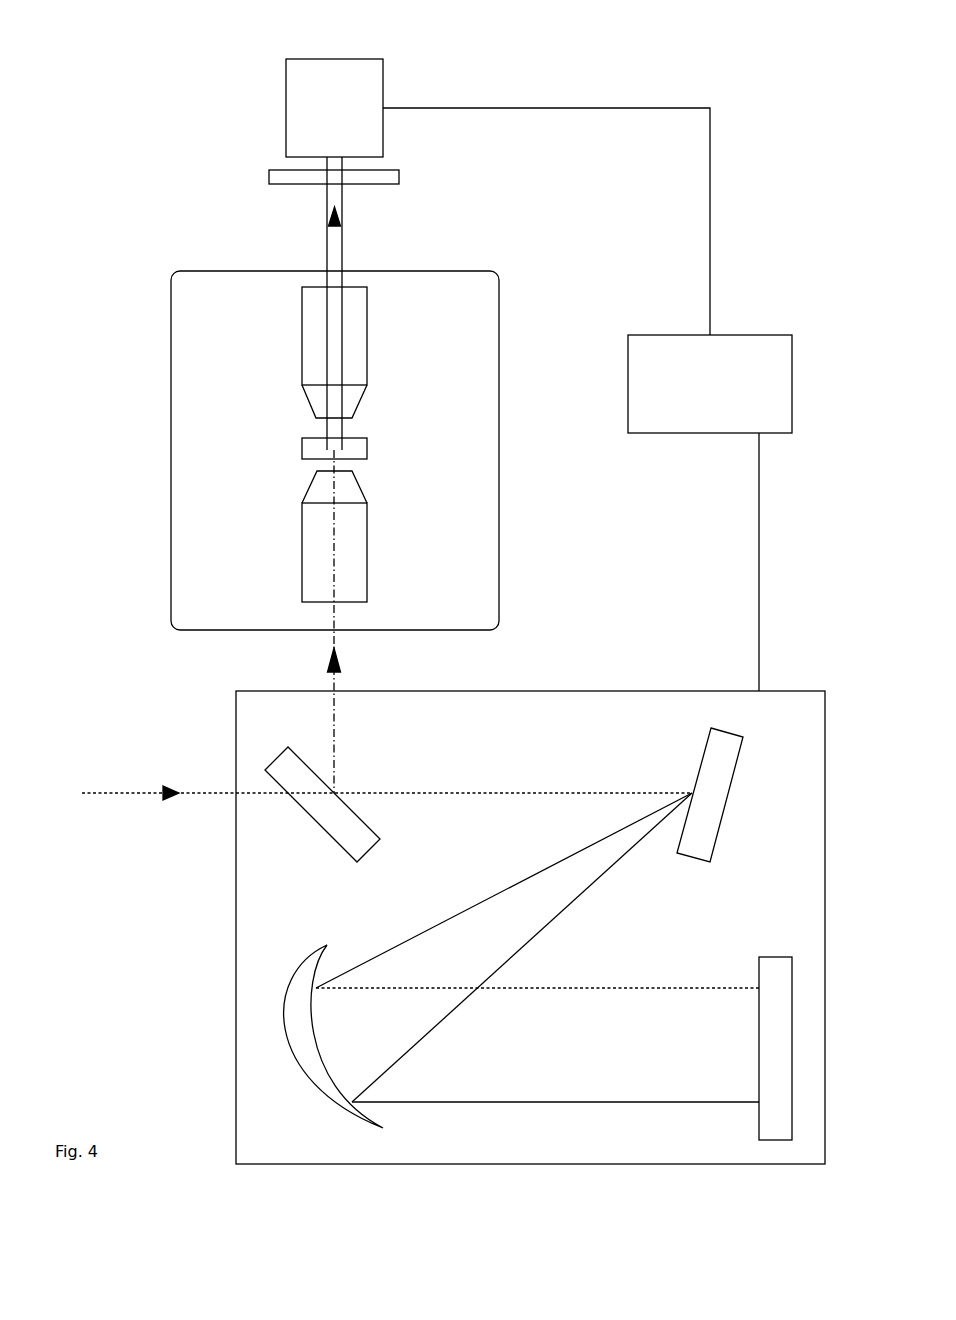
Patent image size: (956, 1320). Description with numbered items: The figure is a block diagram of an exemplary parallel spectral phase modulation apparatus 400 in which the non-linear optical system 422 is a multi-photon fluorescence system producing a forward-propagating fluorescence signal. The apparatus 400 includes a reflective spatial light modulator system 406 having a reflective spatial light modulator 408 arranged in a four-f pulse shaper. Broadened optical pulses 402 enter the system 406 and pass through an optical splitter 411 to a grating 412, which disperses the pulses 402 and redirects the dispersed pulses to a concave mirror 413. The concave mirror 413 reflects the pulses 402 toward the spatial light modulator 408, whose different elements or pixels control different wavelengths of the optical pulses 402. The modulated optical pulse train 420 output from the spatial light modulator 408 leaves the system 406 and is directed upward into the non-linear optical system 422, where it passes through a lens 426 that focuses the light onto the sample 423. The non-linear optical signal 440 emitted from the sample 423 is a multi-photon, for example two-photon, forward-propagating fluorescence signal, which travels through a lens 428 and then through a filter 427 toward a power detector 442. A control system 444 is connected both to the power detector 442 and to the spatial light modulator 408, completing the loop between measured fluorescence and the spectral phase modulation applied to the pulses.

The parallel spectral phase modulation apparatus 400 is at (697, 22).
The broadened optical pulses 402 is at (142, 793).
The reflective spatial light modulator system 406 is at (597, 691).
The reflective spatial light modulator 408 is at (772, 957).
The optical splitter 411 is at (325, 826).
The grating 412 is at (722, 818).
The concave mirror 413 is at (323, 950).
The modulated optical pulse train 420 is at (336, 718).
The non-linear optical system 422 is at (465, 271).
The sample 423 is at (302, 452).
The lens 426 is at (302, 551).
The filter 427 is at (399, 177).
The lens 428 is at (302, 327).
The non-linear optical signal 440 is at (327, 247).
The power detector 442 is at (334, 108).
The control system 444 is at (710, 384).